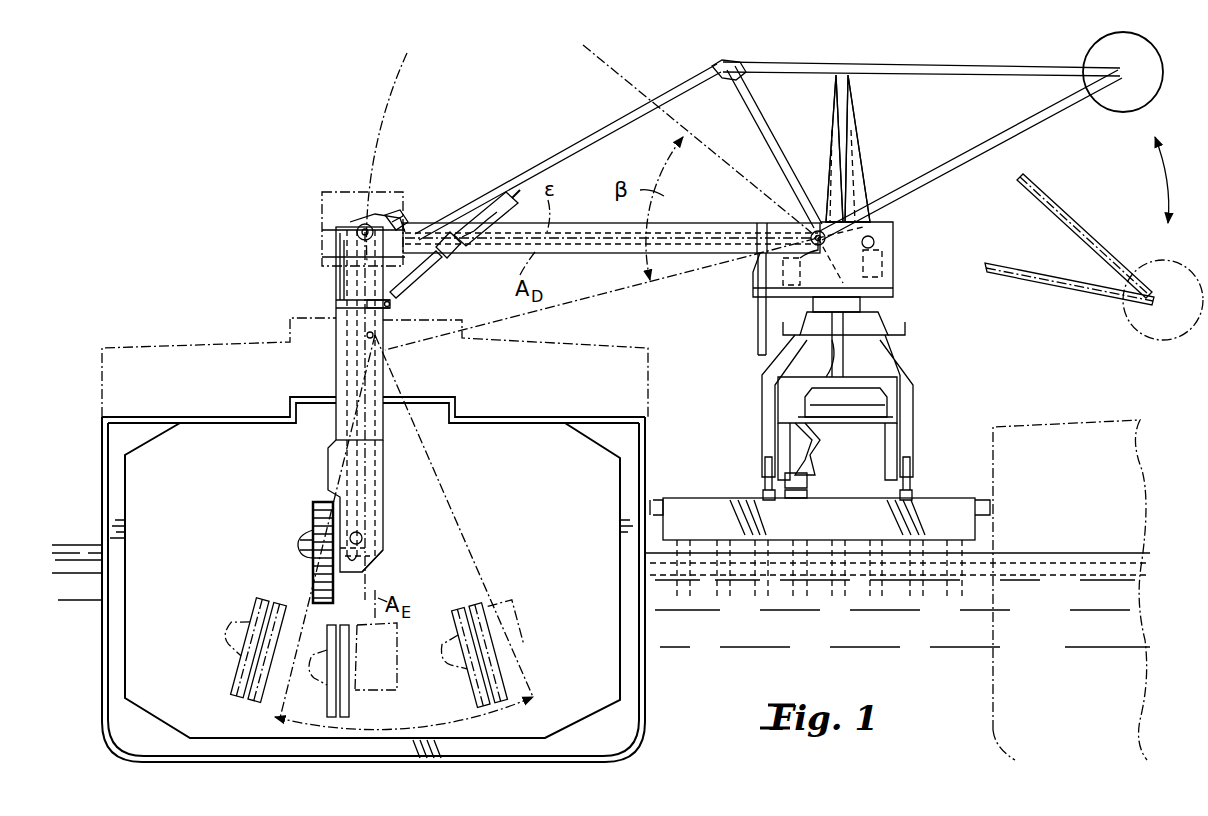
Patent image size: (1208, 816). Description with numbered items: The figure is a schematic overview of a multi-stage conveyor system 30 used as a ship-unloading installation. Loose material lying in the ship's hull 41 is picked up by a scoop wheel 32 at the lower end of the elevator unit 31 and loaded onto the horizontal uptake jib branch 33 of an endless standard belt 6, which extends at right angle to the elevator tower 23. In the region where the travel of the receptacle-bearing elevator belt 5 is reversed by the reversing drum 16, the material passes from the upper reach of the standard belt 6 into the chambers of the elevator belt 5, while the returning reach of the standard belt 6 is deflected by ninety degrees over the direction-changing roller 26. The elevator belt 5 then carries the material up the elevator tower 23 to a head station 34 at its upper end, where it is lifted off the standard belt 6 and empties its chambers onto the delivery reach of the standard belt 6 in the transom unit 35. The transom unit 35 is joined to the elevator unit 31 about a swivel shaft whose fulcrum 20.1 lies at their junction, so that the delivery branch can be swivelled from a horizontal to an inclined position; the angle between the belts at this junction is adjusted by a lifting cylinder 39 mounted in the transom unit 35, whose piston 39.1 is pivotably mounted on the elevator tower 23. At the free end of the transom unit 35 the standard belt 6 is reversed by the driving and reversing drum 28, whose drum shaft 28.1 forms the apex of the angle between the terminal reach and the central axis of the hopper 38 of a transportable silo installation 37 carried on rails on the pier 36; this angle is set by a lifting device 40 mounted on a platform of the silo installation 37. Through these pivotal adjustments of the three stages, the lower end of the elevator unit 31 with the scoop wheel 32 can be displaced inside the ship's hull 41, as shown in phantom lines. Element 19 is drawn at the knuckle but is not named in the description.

The elevator belt 5 is at (340, 285).
The standard belt 6 is at (565, 232).
The reversing drum 16 is at (362, 535).
The joint link 19 is at (405, 216).
The fulcrum 20.1 is at (322, 238).
The elevator tower 23 is at (380, 348).
The direction-changing roller 26 is at (385, 550).
The driving and reversing drum 28 is at (862, 222).
The drum shaft 28.1 is at (815, 228).
The multi-stage conveyor system 30 is at (214, 134).
The elevator unit 31 is at (334, 381).
The scoop wheel 32 is at (313, 506).
The uptake jib branch 33 is at (305, 555).
The head station 34 is at (322, 200).
The transom unit 35 is at (690, 222).
The pier 36 is at (712, 500).
The transportable silo installation 37 is at (893, 362).
The hopper 38 is at (893, 232).
The lifting cylinder 39 is at (460, 250).
The piston 39.1 is at (415, 270).
The lifting device 40 is at (757, 328).
The ship's hull 41 is at (648, 667).